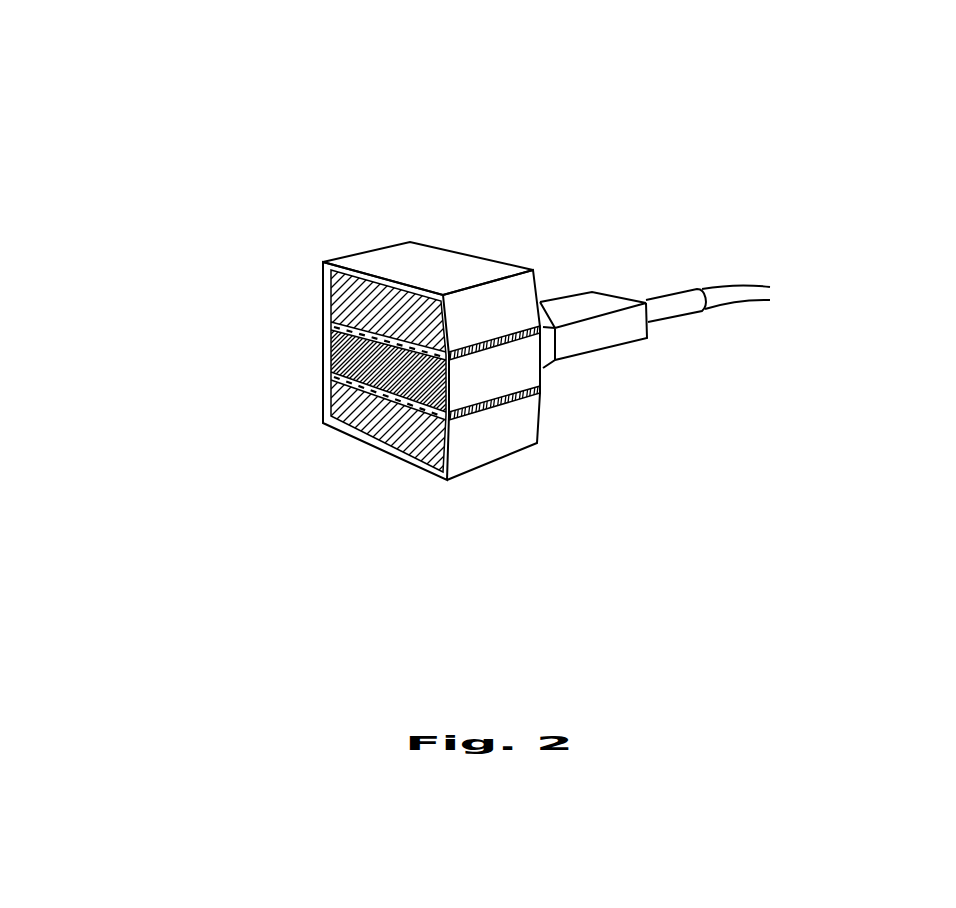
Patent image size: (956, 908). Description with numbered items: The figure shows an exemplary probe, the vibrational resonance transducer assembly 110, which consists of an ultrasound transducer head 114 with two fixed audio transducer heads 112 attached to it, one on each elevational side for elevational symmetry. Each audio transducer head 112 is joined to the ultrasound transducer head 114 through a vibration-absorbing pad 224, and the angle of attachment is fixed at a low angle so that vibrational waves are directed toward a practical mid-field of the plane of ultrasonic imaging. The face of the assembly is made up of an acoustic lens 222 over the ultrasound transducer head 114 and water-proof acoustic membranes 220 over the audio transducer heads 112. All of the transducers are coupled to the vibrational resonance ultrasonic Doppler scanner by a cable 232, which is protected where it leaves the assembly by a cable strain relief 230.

The vibrational resonance transducer assembly 110 is at (382, 97).
The audio transducer head 112 is at (345, 436).
The ultrasound transducer head 114 is at (563, 368).
The water-proof acoustic membrane 220 is at (327, 283).
The acoustic lens 222 is at (333, 335).
The vibration-absorbing pad 224 is at (546, 392).
The cable strain relief 230 is at (662, 293).
The cable 232 is at (735, 287).